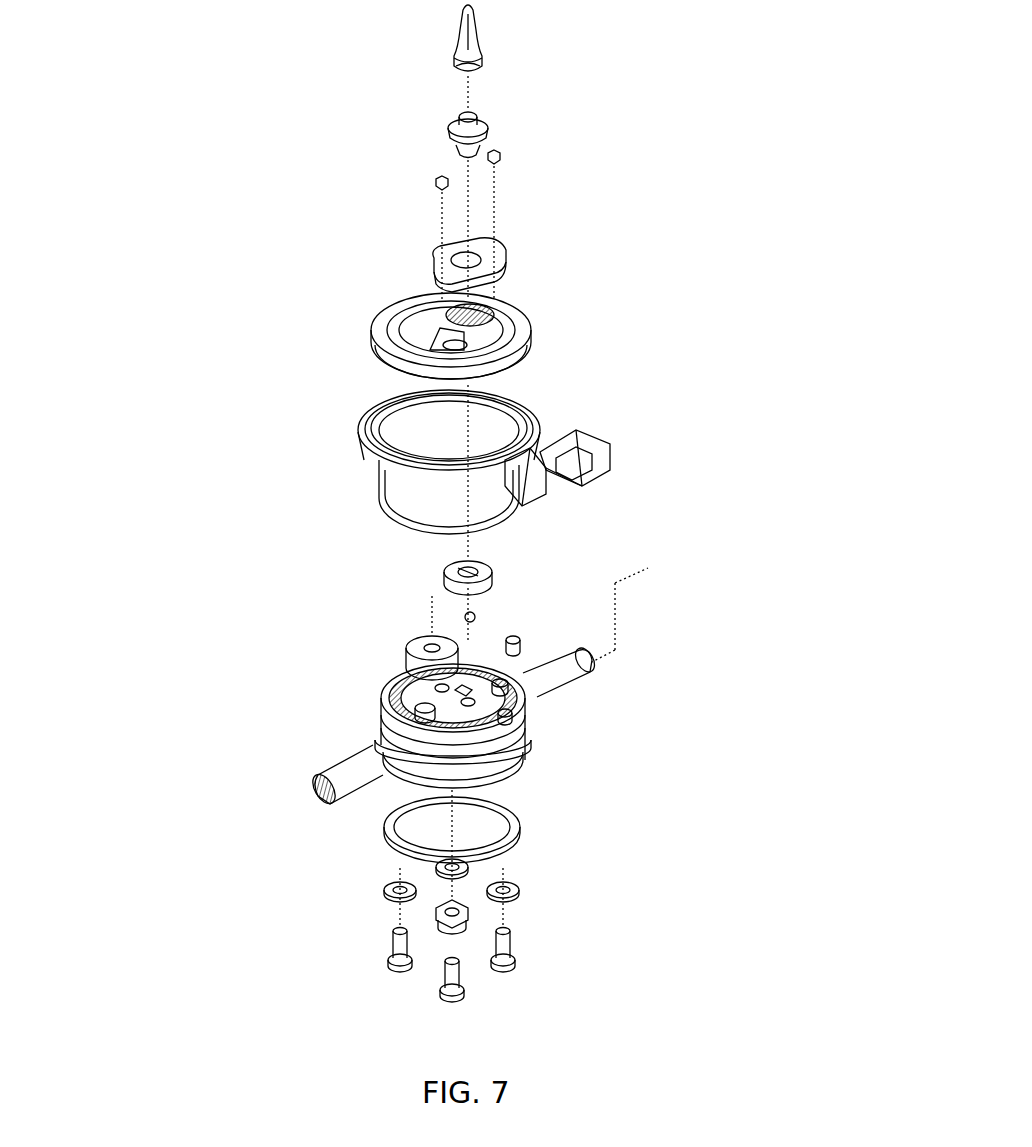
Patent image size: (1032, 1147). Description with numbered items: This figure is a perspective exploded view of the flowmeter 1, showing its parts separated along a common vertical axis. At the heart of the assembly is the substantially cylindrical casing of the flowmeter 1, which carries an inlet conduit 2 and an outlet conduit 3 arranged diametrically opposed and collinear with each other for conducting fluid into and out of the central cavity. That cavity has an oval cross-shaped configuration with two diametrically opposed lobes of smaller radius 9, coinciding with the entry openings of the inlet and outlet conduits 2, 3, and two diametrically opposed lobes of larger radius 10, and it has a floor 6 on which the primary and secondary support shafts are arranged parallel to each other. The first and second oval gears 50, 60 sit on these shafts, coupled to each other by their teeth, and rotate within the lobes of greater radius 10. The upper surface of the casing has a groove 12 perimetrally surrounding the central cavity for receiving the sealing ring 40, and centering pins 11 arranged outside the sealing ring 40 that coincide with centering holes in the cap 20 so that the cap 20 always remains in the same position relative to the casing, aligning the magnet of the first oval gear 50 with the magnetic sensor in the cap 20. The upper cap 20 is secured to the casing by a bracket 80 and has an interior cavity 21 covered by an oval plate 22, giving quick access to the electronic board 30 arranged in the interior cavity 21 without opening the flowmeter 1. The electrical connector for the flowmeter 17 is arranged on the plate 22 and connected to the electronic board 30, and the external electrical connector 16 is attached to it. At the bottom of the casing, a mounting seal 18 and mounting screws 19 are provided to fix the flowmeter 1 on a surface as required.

The flowmeter 1 is at (474, 735).
The inlet conduit 2 is at (570, 665).
The outlet conduit 3 is at (350, 772).
The floor 6 is at (420, 709).
The lobes of smaller radius 9 is at (500, 683).
The lobes of larger radius 10 is at (502, 714).
The centering pins 11 is at (526, 636).
The groove 12 is at (385, 685).
The external electrical connector 16 is at (490, 50).
The electrical connector for the flowmeter 17 is at (497, 133).
The mounting seal 18 is at (520, 848).
The mounting screws 19 is at (382, 934).
The upper cap 20 is at (443, 290).
The interior cavity 21 is at (462, 342).
The oval plate 22 is at (443, 250).
The electronic board 30 is at (480, 312).
The sealing ring 40 is at (497, 395).
The first oval gear 50 is at (490, 567).
The second oval gear 60 is at (407, 636).
The bracket 80 is at (575, 438).